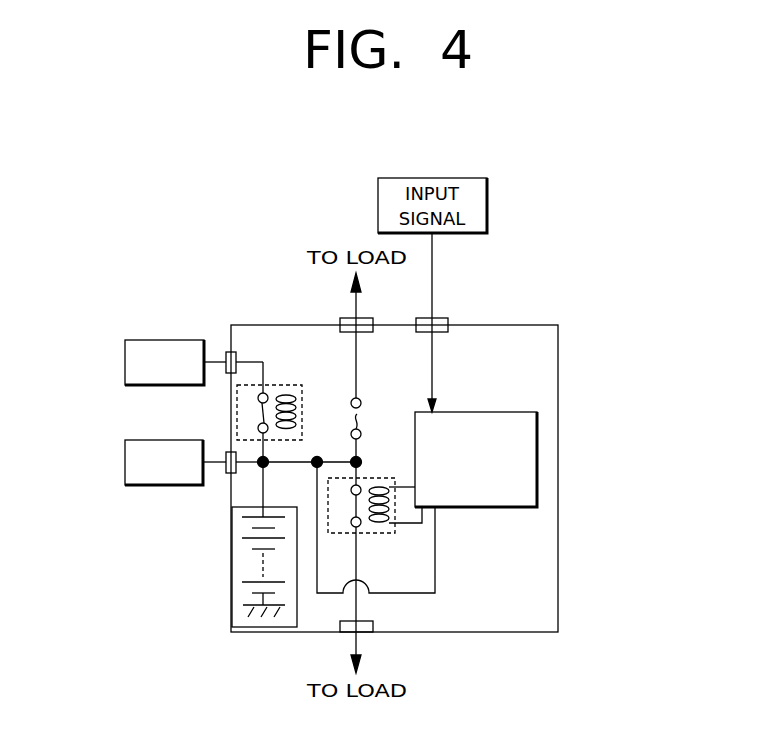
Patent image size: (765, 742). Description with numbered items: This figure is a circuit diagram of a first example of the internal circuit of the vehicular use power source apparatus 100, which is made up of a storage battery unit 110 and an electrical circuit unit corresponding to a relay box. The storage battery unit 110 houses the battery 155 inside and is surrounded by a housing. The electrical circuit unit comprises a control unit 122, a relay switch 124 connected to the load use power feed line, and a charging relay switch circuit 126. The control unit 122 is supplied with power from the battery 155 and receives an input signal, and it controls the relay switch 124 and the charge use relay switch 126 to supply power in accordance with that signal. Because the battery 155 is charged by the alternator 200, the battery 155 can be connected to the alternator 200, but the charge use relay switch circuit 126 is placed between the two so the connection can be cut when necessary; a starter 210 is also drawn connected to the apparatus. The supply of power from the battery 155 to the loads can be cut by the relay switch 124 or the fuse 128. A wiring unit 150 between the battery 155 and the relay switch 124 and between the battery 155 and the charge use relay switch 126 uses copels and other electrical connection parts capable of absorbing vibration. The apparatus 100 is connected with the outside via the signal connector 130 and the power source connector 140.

The vehicular use power source apparatus 100 is at (530, 324).
The storage battery unit 110 is at (224, 555).
The control unit 122 is at (537, 428).
The relay switch 124 is at (380, 538).
The charge use relay switch circuit 126 is at (283, 385).
The fuse 128 is at (358, 414).
The signal connector 130 is at (225, 351).
The power source connector 140 is at (340, 318).
The wiring unit 150 is at (262, 485).
The battery 155 is at (235, 598).
The alternator 200 is at (123, 355).
The starter 210 is at (123, 452).